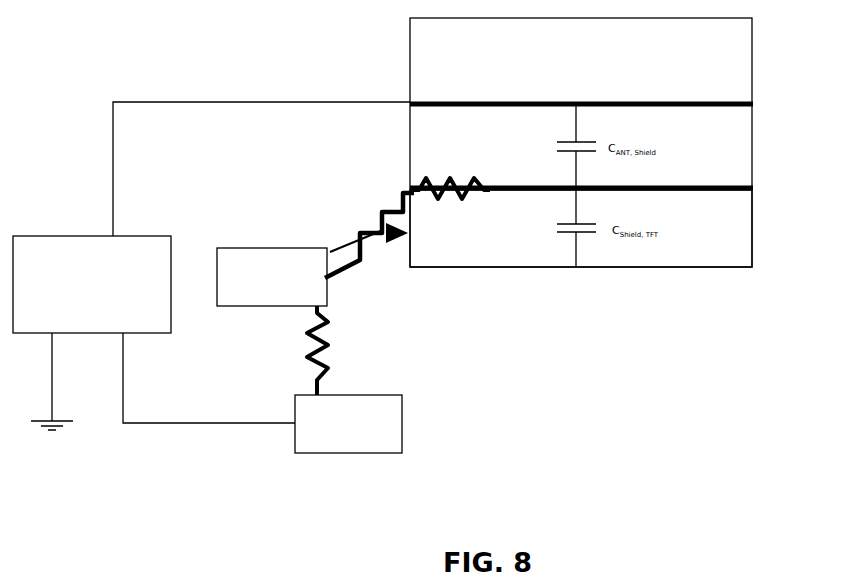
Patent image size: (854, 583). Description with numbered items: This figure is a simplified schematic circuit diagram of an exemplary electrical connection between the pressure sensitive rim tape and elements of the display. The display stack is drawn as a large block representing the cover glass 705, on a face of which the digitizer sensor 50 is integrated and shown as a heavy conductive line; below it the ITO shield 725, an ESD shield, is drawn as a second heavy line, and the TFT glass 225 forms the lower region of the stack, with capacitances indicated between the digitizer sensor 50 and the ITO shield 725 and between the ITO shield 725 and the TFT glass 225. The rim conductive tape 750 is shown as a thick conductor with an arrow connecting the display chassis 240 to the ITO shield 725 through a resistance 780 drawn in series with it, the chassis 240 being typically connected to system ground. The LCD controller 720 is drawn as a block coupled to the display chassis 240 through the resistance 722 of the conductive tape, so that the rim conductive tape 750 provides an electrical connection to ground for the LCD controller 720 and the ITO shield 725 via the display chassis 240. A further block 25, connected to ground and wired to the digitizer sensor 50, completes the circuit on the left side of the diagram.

The cover glass 705 is at (752, 62).
The digitizer sensor 50 is at (717, 106).
The ITO shield 725 is at (730, 192).
The TFT glass 225 is at (740, 235).
The transceiver circuitry 25 is at (98, 236).
The display chassis 240 is at (238, 248).
The LCD controller 720 is at (402, 423).
The resistance of conductive tape 722 is at (353, 315).
The rim conductive tape 750 is at (377, 226).
The resistor 780 is at (472, 182).